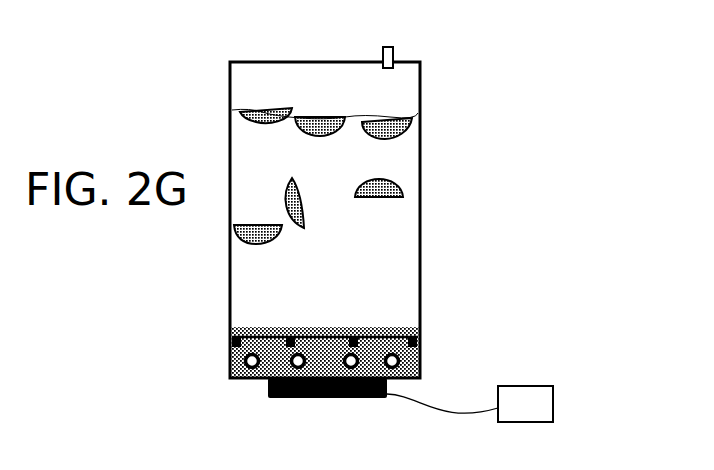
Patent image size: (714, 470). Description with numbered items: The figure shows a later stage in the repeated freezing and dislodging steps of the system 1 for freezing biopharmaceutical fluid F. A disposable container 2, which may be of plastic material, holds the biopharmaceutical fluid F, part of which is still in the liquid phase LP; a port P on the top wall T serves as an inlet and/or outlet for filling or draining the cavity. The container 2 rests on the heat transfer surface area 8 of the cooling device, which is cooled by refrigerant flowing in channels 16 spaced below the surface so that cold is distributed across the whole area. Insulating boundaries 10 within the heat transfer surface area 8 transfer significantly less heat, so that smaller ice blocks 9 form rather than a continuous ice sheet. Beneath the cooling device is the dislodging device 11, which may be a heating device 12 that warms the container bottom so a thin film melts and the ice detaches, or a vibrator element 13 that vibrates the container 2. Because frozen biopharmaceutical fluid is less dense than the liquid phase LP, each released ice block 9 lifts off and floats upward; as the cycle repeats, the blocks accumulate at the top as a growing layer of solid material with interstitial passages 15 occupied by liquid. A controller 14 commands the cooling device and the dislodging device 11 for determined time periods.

The system for freezing biopharmaceutical fluid 1 is at (493, 98).
The container 2 is at (422, 231).
The heat transfer surface area 8 is at (246, 336).
The ice blocks 9 is at (388, 119).
The insulating boundaries 10 is at (292, 337).
The dislodging device 11 is at (249, 406).
The heating device 12 is at (249, 406).
The vibrator element 13 is at (301, 398).
The controller 14 is at (553, 400).
The interstitial passages 15 is at (290, 124).
The channels 16 is at (399, 358).
The port P is at (386, 46).
The top wall T is at (405, 61).
The biopharmaceutical fluid F is at (375, 218).
The liquid phase LP is at (394, 170).